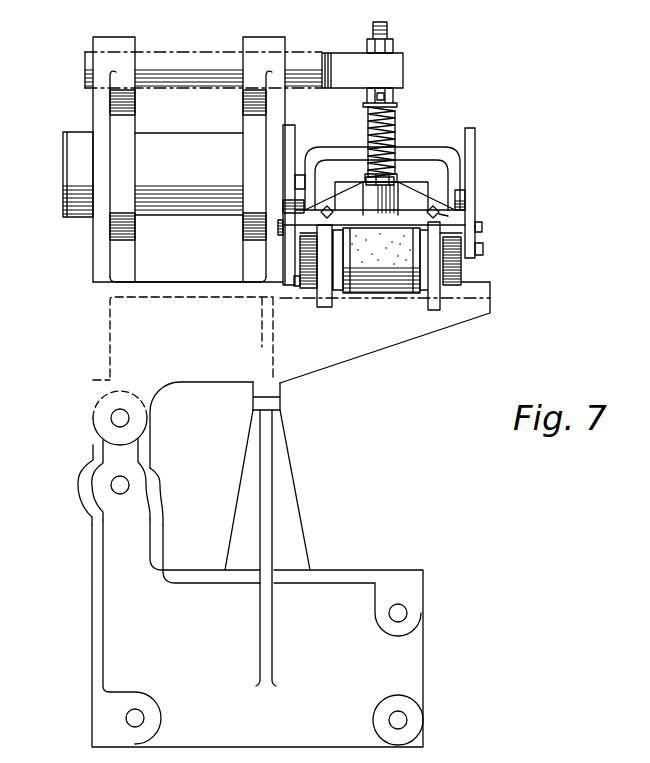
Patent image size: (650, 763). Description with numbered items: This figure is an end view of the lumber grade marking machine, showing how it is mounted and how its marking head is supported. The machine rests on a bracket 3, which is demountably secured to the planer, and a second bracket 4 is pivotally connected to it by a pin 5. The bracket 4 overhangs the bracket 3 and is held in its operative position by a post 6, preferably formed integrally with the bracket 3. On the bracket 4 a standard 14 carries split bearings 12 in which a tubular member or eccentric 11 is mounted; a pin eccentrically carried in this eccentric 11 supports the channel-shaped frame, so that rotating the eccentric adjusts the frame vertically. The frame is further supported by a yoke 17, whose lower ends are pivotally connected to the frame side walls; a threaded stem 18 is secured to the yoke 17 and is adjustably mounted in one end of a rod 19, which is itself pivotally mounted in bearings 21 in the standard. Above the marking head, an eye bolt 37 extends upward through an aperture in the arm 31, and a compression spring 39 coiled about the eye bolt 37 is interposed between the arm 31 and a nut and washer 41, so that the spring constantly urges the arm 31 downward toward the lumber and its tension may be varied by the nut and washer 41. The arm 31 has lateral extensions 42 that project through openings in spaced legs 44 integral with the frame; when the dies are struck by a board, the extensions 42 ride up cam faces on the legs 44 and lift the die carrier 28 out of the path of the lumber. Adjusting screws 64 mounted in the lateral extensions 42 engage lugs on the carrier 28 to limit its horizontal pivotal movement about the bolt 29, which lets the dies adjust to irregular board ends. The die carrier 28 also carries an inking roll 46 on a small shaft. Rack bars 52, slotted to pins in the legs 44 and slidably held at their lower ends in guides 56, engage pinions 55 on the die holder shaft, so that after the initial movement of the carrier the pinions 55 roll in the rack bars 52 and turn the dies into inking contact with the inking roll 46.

The bracket 3 is at (110, 632).
The bracket 4 is at (135, 330).
The pin 5 is at (118, 420).
The post 6 is at (268, 444).
The tubular member or eccentric 11 is at (75, 173).
The split bearings 12 is at (125, 157).
The standard 14 is at (100, 115).
The yoke 17 is at (432, 148).
The threaded stem 18 is at (385, 29).
The rod 19 is at (172, 58).
The bearings 21 is at (108, 43).
The die carrier 28 is at (435, 310).
The bolt 29 is at (391, 178).
The arm 31 is at (391, 200).
The eye bolt 37 is at (385, 95).
The compression spring 39 is at (392, 120).
The nut and washer 41 is at (390, 103).
The lateral extensions 42 is at (481, 230).
The legs 44 is at (285, 152).
The inking roll 46 is at (381, 292).
The rack bars 52 is at (300, 247).
The pinions 55 is at (306, 290).
The guides 56 is at (303, 284).
The adjusting screws 64 is at (327, 206).